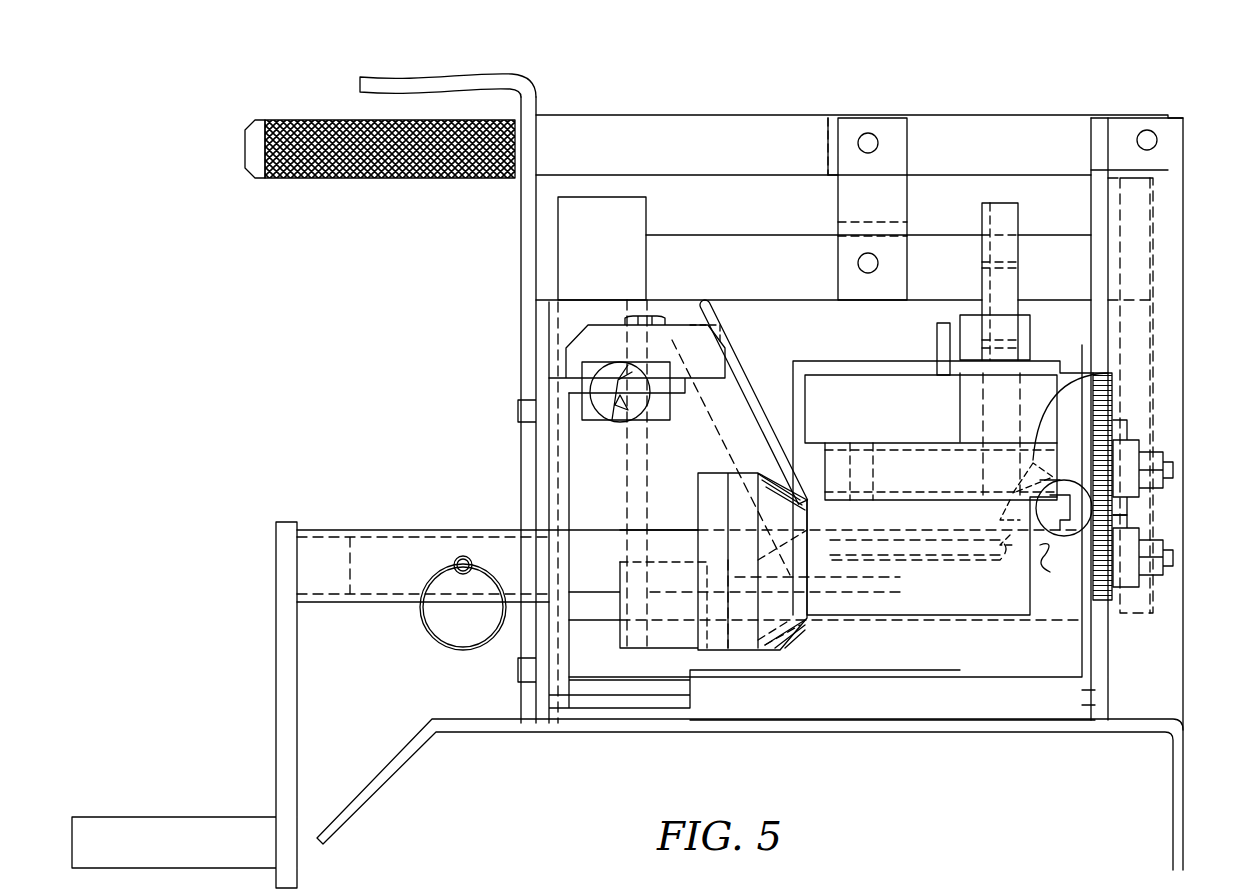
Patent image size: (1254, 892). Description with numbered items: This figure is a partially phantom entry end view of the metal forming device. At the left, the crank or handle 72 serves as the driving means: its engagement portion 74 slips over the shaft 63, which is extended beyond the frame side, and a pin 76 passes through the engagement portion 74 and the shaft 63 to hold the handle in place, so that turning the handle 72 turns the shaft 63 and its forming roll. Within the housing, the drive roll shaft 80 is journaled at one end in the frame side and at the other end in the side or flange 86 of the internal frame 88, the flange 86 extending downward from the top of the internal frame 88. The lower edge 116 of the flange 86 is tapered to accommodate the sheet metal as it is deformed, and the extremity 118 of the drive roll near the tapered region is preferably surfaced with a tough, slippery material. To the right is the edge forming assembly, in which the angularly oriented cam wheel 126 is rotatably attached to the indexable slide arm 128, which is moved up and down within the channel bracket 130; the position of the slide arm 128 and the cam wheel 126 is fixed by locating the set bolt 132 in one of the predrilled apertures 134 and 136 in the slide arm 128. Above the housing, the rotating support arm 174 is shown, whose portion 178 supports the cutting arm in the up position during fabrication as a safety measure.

The shaft 63 is at (382, 543).
The crank or handle 72 is at (285, 560).
The engagement portion 74 is at (388, 600).
The pin 76 is at (463, 556).
The shaft 80 is at (955, 445).
The side or flange 86 is at (800, 405).
The internal frame 88 is at (893, 365).
The lower edge 116 is at (797, 495).
The extremity 118 is at (830, 452).
The cam wheel 126 is at (1108, 377).
The indexable slide arm 128 is at (1002, 220).
The channel bracket 130 is at (1030, 337).
The set bolt 132 is at (942, 322).
The aperture 134 is at (980, 262).
The aperture 136 is at (1005, 340).
The rotating support arm 174 is at (430, 377).
The portion 178 is at (385, 83).